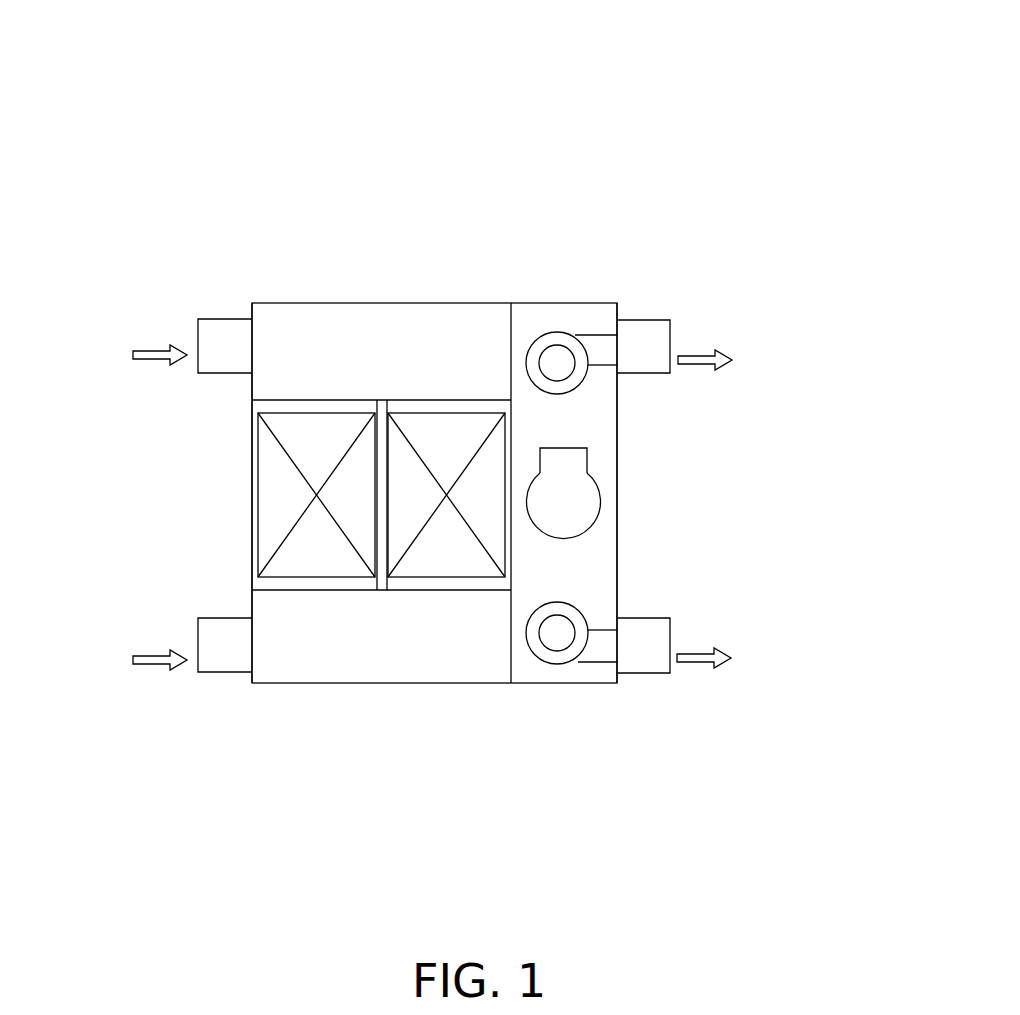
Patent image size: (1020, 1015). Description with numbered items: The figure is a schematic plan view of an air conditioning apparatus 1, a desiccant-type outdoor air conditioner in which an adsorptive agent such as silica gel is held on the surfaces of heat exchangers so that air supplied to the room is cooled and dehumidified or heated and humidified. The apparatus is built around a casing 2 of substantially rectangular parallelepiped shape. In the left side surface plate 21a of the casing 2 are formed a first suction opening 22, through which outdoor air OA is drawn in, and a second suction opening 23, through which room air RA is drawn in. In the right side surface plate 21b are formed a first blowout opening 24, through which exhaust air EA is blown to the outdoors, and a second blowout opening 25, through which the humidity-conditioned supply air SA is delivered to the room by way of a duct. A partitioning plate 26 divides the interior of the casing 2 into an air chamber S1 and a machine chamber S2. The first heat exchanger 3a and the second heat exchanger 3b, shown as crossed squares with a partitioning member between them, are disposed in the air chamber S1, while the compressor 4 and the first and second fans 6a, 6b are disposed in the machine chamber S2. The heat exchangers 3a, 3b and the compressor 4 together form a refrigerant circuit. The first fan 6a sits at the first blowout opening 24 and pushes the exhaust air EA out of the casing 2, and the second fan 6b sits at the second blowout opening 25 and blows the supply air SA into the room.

The air conditioning apparatus 1 is at (528, 145).
The casing 2 is at (560, 303).
The partitioning plate 26 is at (503, 325).
The air chamber S1 is at (413, 322).
The machine chamber S2 is at (600, 314).
The left side surface plate 21a is at (252, 468).
The right side surface plate 21b is at (617, 480).
The first heat exchanger 3a is at (440, 414).
The second heat exchanger 3b is at (318, 414).
The first fan 6a is at (569, 334).
The second fan 6b is at (597, 662).
The compressor 4 is at (600, 515).
The first suction opening 22 is at (200, 319).
The second suction opening 23 is at (200, 620).
The first blowout opening 24 is at (670, 322).
The second blowout opening 25 is at (670, 622).